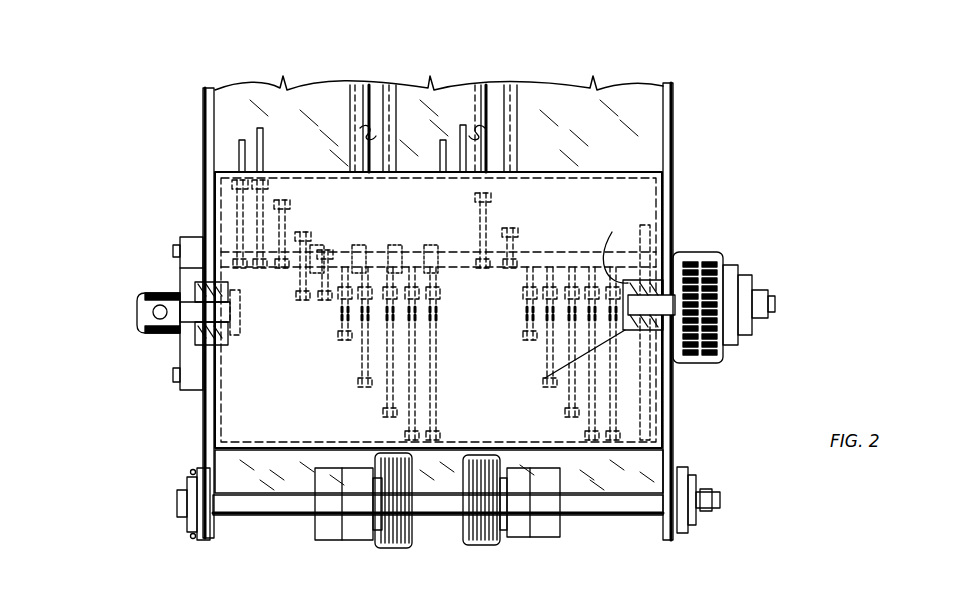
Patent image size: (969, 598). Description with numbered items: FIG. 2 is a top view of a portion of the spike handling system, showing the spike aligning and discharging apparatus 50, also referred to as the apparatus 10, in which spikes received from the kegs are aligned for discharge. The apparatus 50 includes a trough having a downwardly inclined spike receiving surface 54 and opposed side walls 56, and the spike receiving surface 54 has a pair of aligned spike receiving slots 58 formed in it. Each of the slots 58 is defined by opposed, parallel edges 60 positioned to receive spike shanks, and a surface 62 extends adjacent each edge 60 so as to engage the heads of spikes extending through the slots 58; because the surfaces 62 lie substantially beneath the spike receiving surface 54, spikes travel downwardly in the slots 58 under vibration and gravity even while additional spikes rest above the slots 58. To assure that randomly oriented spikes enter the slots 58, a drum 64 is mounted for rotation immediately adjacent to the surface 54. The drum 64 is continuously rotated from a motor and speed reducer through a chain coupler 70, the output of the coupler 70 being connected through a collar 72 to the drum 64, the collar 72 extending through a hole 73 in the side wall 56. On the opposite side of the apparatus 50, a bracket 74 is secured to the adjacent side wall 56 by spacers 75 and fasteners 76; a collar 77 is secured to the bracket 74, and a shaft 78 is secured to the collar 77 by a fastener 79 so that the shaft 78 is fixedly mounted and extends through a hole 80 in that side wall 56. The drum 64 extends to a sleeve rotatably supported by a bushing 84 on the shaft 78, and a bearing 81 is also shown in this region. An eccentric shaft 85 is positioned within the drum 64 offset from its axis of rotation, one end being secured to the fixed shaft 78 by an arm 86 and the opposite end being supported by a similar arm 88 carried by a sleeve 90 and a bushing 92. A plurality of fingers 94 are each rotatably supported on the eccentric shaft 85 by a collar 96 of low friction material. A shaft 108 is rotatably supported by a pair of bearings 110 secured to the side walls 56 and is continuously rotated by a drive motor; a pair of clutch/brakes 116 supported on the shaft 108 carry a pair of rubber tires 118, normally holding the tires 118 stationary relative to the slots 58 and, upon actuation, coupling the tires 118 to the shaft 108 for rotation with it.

The apparatus 10 is at (181, 67).
The spike aligning and discharging apparatus 50 is at (168, 95).
The spike receiving surface 54 is at (623, 93).
The side walls 56 is at (203, 128).
The spike receiving slots 58 is at (376, 78).
The edges 60 is at (372, 130).
The surface 62 is at (355, 90).
The drum 64 is at (598, 174).
The chain coupler 70 is at (720, 352).
The collar 72 is at (672, 360).
The hole 73 is at (675, 255).
The bracket 74 is at (180, 272).
The spacers 75 is at (195, 237).
The fasteners 76 is at (173, 248).
The collar 77 is at (140, 330).
The shaft 78 is at (228, 313).
The fastener 79 is at (153, 310).
The hole 80 is at (220, 345).
The bearing 81 is at (200, 340).
The bushing 84 is at (200, 322).
The eccentric shaft 85 is at (377, 262).
The arm 86 is at (228, 278).
The arm 88 is at (645, 225).
The sleeve 90 is at (570, 362).
The bushing 92 is at (615, 248).
The fingers 94 is at (255, 145).
The collar 96 is at (358, 251).
The shaft 108 is at (242, 517).
The bearings 110 is at (192, 533).
The clutch/brakes 116 is at (337, 547).
The rubber tires 118 is at (476, 549).